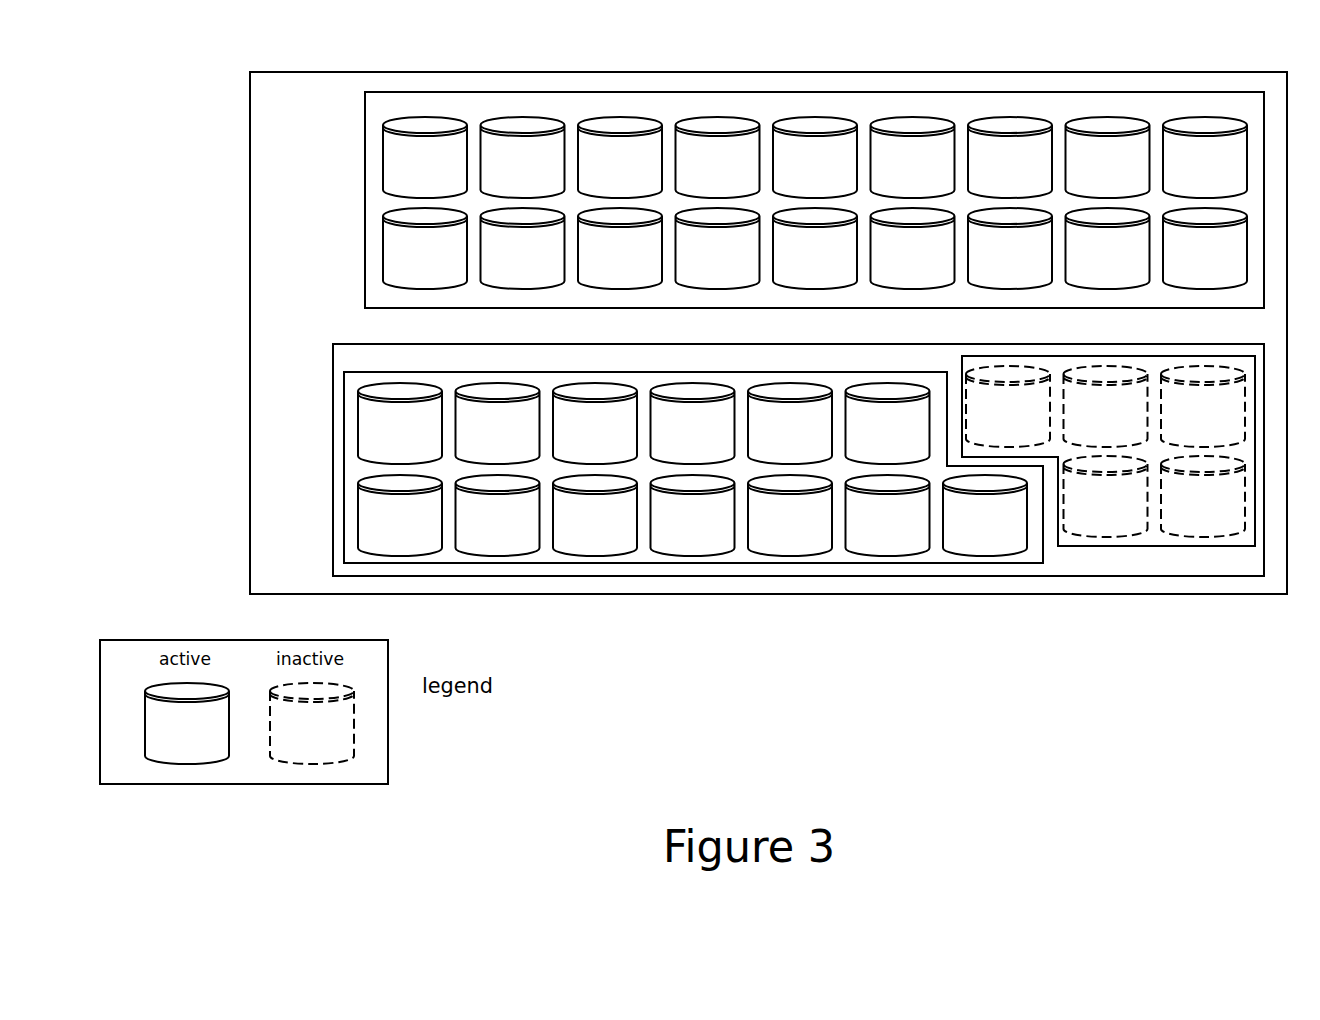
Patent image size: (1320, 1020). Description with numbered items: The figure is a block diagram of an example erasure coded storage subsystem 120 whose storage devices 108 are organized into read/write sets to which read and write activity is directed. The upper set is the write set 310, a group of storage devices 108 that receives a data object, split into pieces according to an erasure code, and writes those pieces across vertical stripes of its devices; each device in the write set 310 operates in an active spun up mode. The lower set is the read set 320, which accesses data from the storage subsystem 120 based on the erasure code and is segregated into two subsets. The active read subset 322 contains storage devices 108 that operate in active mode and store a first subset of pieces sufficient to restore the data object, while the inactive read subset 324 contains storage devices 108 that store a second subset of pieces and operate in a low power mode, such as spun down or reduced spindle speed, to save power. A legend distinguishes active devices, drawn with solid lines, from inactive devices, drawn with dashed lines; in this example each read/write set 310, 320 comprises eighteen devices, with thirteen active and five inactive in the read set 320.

The storage subsystem 120 is at (182, 112).
The storage devices 108 is at (409, 172).
The write set 310 is at (365, 180).
The read set 320 is at (333, 469).
The active read subset 322 is at (659, 563).
The inactive read subset 324 is at (1158, 546).